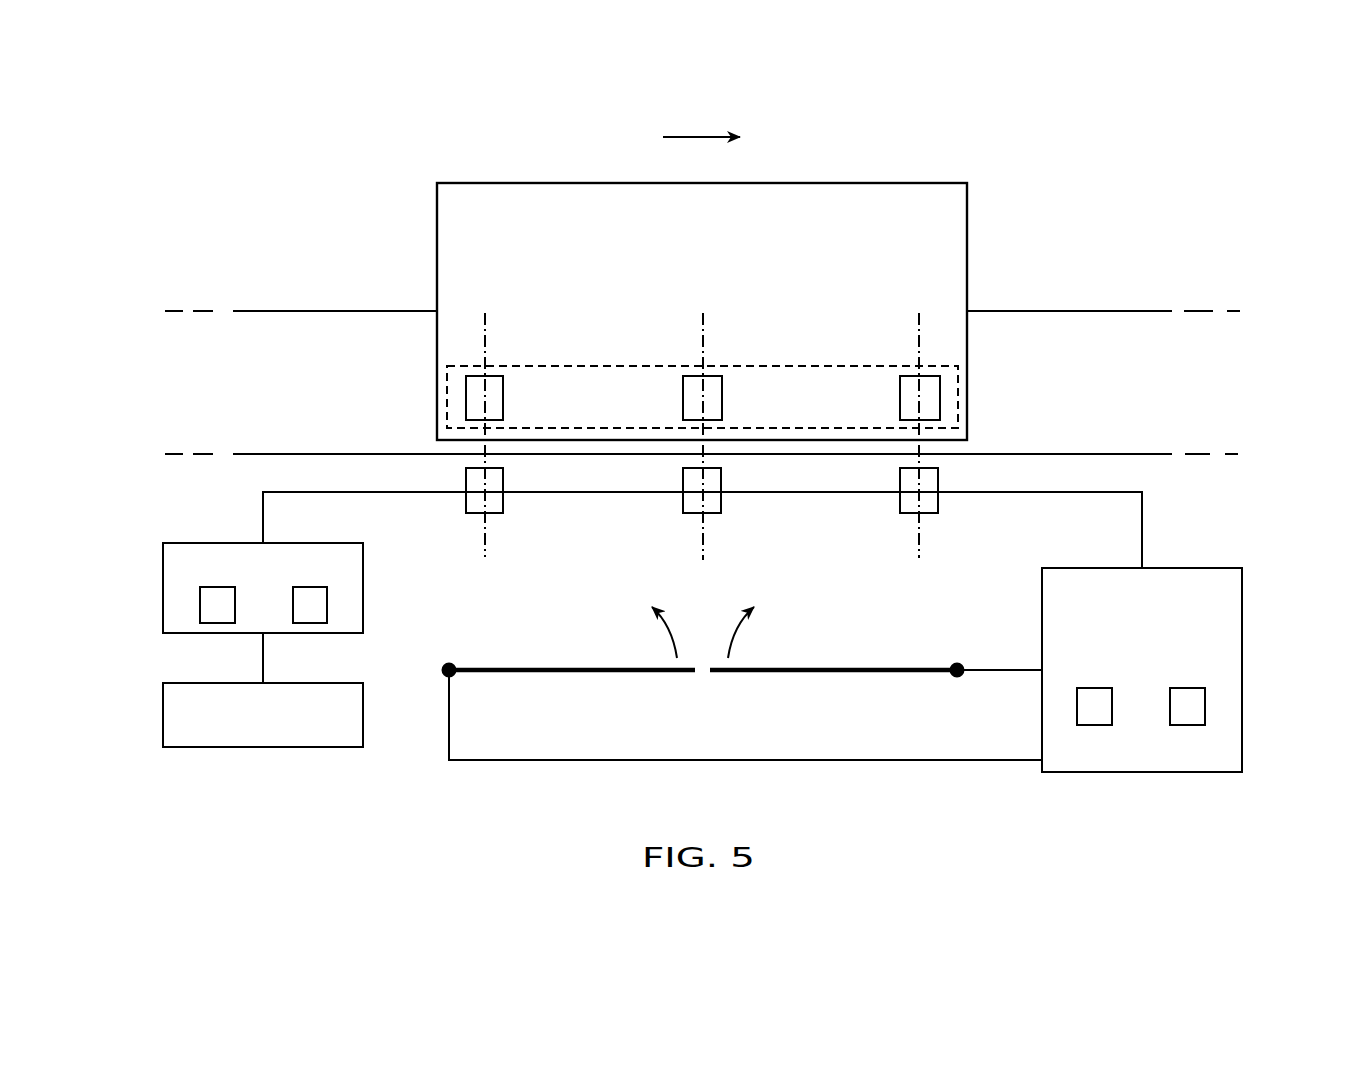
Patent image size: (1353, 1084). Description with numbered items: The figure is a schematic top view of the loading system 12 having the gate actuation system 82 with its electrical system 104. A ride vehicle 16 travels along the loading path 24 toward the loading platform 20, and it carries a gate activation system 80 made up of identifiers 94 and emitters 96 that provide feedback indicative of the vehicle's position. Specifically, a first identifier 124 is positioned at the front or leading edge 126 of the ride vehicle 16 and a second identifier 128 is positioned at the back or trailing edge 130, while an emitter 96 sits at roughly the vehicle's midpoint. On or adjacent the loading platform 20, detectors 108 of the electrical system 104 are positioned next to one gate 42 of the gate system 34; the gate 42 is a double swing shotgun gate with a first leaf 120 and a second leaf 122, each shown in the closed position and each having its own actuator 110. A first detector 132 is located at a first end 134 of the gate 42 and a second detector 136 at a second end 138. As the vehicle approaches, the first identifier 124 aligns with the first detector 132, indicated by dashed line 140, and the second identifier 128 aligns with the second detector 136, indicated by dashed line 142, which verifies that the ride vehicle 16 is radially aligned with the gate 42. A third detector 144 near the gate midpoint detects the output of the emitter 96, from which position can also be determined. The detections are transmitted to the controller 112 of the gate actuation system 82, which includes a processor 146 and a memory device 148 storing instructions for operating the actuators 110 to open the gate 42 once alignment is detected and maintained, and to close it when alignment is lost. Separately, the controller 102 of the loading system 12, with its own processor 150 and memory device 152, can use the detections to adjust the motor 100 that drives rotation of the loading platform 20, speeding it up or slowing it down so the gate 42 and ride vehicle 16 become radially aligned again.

The loading system 12 is at (1108, 212).
The ride vehicle 16 is at (855, 183).
The loading platform 20 is at (286, 454).
The loading path 24 is at (286, 311).
The gate system 34 is at (1237, 537).
The gate 42 is at (628, 703).
The gate activation system 80 is at (785, 365).
The gate actuation system 82 is at (1238, 499).
The identifiers 94 is at (503, 399).
The emitters 96 is at (722, 398).
The motor 100 is at (163, 716).
The controller 102 is at (228, 608).
The electrical system 104 is at (1202, 404).
The detectors 108 is at (495, 513).
The actuators 110 is at (445, 675).
The controller 112 is at (1142, 706).
The first leaf 120 is at (500, 670).
The second leaf 122 is at (782, 670).
The first identifier 124 is at (908, 376).
The leading edge 126 is at (998, 402).
The second identifier 128 is at (494, 376).
The trailing edge 130 is at (412, 402).
The first detector 132 is at (938, 500).
The first end 134 is at (992, 587).
The second detector 136 is at (475, 513).
The second end 138 is at (438, 605).
The dashed line 140 is at (917, 543).
The dashed line 142 is at (488, 542).
The third detector 144 is at (722, 485).
The processor 146 is at (1187, 725).
The memory device 148 is at (1097, 688).
The processor 150 is at (310, 623).
The memory device 152 is at (217, 623).